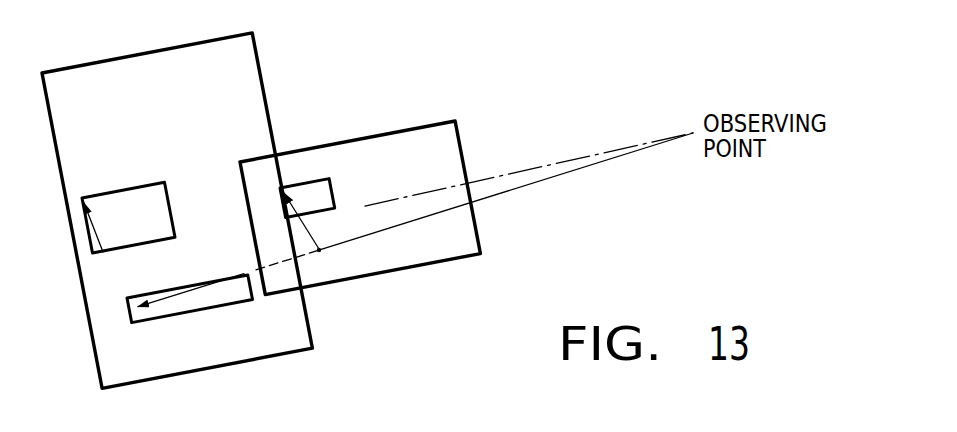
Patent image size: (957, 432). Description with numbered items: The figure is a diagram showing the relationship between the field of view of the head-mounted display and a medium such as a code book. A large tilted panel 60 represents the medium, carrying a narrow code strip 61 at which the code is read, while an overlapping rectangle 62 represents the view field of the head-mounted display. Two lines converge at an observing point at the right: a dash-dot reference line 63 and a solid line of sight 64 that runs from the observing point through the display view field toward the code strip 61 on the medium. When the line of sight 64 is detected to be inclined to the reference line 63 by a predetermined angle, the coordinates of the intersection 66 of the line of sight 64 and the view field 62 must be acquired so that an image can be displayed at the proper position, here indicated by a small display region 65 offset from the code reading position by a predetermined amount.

The first substrate / liquid crystal panel 60 is at (127, 57).
The first reflecting region 61 is at (233, 300).
The second substrate / panel 62 is at (345, 142).
The reference line 63 is at (521, 170).
The light path to observing point 64 is at (547, 180).
The second reflecting region 65 is at (305, 227).
The intersection 66 is at (319, 252).